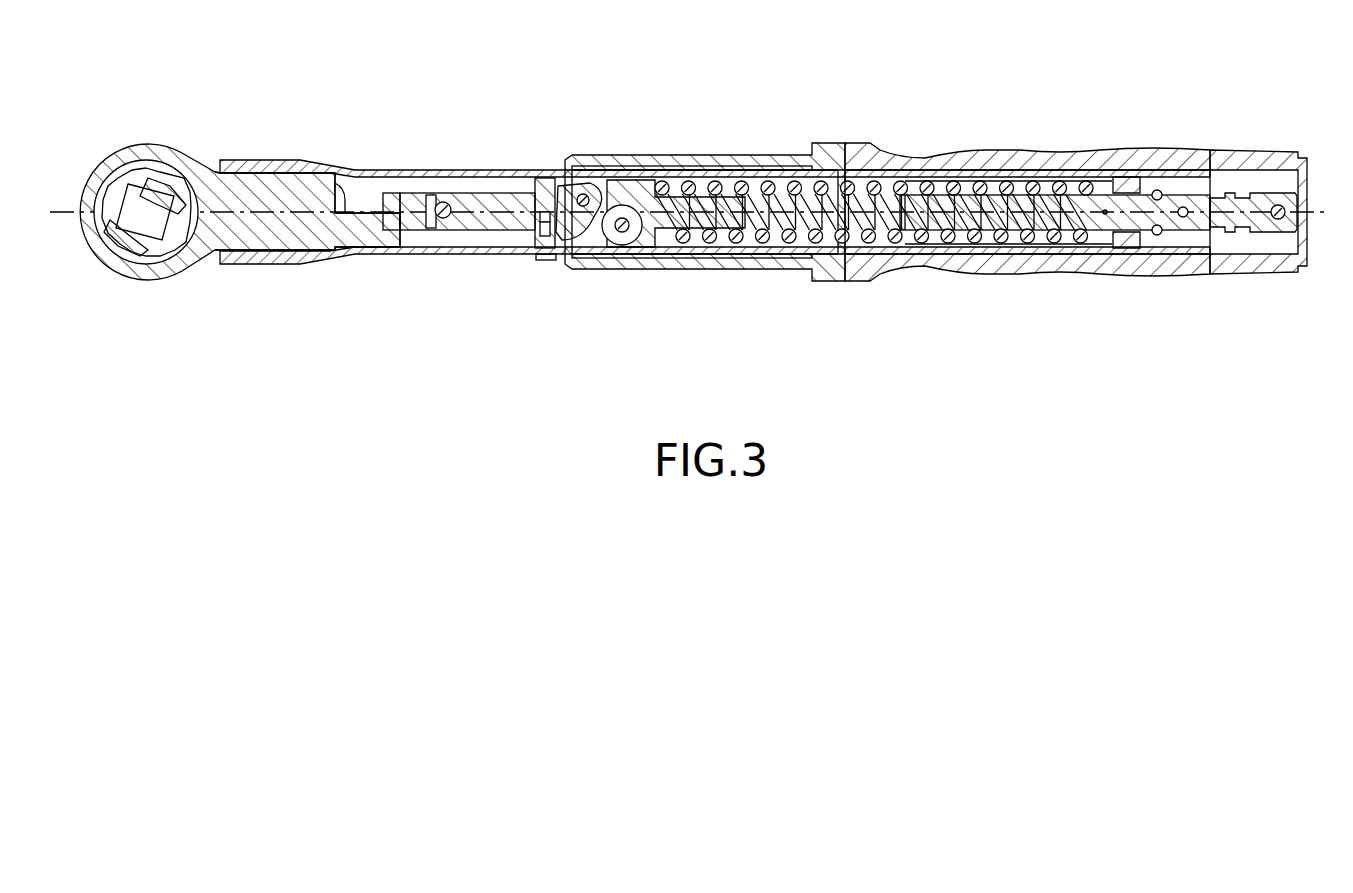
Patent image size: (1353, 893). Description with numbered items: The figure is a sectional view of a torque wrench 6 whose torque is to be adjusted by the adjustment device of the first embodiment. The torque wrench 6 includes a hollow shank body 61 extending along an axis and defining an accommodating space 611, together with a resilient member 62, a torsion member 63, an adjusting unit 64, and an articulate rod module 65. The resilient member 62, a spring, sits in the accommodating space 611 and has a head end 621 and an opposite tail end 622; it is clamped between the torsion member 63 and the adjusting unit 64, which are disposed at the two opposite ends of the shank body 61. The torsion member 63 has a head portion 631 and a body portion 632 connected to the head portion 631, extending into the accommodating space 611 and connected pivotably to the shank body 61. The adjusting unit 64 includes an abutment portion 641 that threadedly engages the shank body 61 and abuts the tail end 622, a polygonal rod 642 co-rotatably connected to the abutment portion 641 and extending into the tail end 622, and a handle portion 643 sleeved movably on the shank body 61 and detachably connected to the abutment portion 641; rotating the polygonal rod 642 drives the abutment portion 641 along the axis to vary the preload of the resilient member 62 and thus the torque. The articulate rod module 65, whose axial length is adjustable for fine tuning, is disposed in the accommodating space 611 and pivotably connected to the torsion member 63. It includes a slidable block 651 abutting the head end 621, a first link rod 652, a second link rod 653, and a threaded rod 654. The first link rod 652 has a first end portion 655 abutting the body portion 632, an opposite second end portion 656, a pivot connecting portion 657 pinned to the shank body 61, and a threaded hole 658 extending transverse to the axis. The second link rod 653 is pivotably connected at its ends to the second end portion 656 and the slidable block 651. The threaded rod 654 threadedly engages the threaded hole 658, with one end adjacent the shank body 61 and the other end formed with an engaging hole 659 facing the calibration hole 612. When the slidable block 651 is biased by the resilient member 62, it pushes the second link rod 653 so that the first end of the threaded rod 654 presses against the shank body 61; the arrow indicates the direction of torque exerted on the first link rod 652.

The torque wrench 6 is at (189, 140).
The shank body 61 is at (1117, 183).
The accommodating space 611 is at (487, 188).
The calibration hole 612 is at (542, 252).
The resilient member 62 is at (888, 185).
The head end 621 is at (653, 183).
The tail end 622 is at (1082, 187).
The torsion member 63 is at (128, 153).
The head portion 631 is at (128, 153).
The body portion 632 is at (283, 198).
The adjusting unit 64 is at (1305, 52).
The abutment portion 641 is at (1160, 192).
The polygonal rod 642 is at (1293, 192).
The handle portion 643 is at (1257, 160).
The articulate rod module 65 is at (477, 222).
The slidable block 651 is at (688, 223).
The first link rod 652 is at (460, 220).
The second link rod 653 is at (590, 187).
The threaded rod 654 is at (545, 180).
The first end portion 655 is at (392, 195).
The second end portion 656 is at (593, 222).
The pivot connecting portion 657 is at (450, 197).
The threaded hole 658 is at (543, 230).
The engaging hole 659 is at (547, 230).